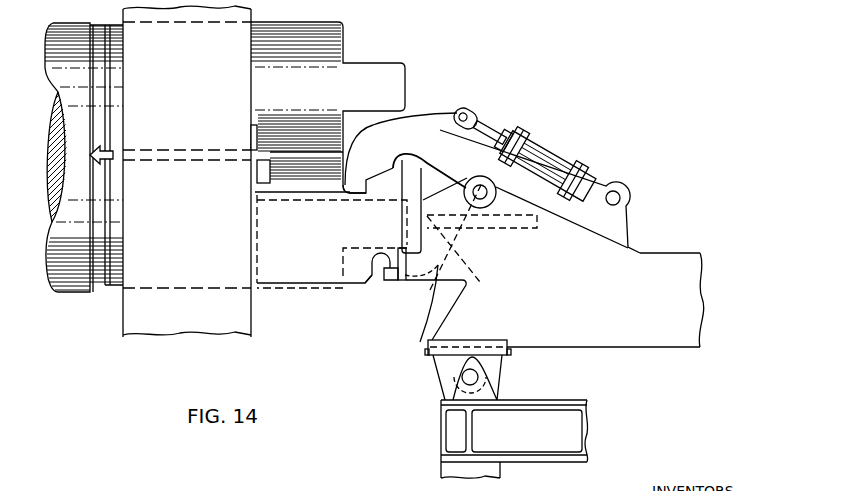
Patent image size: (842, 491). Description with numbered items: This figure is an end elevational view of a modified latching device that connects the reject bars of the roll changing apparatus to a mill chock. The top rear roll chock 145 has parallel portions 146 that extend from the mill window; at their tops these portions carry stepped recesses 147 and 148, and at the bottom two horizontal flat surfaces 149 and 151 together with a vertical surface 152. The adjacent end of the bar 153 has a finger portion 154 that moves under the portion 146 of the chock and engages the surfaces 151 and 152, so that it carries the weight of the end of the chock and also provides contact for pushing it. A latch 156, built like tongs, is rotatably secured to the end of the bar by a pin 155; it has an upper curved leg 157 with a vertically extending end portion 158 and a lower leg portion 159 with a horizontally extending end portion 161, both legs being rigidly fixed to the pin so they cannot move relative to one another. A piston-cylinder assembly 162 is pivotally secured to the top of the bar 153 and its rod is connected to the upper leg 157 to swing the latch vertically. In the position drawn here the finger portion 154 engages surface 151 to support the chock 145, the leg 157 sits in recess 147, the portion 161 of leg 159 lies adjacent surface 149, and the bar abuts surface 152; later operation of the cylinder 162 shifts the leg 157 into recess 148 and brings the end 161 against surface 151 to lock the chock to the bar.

The top rear roll chock 145 is at (127, 286).
The parallel portions 146 is at (310, 257).
The stepped recess 147 is at (366, 196).
The stepped recess 148 is at (393, 165).
The horizontal flat surface 149 is at (376, 278).
The horizontal flat surface 151 is at (401, 270).
The vertical surface 152 is at (374, 266).
The bar 153 is at (653, 321).
The finger portion 154 is at (438, 290).
The pin 155 is at (490, 192).
The latch 156 is at (427, 138).
The upper curved leg 157 is at (382, 128).
The vertically extending end portion 158 is at (345, 192).
The lower leg portion 159 is at (464, 255).
The horizontally extending end portion 161 is at (404, 283).
The piston-cylinder assembly 162 is at (553, 163).